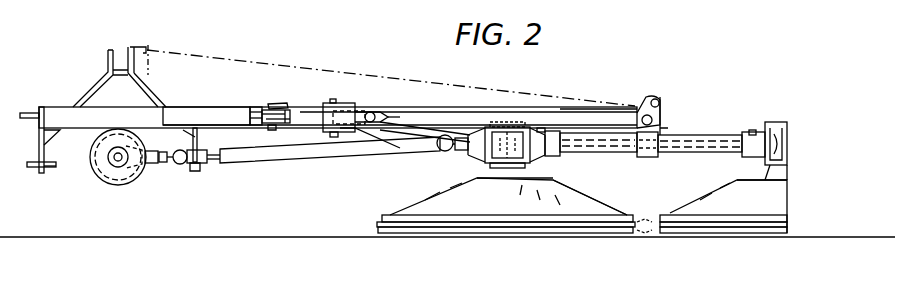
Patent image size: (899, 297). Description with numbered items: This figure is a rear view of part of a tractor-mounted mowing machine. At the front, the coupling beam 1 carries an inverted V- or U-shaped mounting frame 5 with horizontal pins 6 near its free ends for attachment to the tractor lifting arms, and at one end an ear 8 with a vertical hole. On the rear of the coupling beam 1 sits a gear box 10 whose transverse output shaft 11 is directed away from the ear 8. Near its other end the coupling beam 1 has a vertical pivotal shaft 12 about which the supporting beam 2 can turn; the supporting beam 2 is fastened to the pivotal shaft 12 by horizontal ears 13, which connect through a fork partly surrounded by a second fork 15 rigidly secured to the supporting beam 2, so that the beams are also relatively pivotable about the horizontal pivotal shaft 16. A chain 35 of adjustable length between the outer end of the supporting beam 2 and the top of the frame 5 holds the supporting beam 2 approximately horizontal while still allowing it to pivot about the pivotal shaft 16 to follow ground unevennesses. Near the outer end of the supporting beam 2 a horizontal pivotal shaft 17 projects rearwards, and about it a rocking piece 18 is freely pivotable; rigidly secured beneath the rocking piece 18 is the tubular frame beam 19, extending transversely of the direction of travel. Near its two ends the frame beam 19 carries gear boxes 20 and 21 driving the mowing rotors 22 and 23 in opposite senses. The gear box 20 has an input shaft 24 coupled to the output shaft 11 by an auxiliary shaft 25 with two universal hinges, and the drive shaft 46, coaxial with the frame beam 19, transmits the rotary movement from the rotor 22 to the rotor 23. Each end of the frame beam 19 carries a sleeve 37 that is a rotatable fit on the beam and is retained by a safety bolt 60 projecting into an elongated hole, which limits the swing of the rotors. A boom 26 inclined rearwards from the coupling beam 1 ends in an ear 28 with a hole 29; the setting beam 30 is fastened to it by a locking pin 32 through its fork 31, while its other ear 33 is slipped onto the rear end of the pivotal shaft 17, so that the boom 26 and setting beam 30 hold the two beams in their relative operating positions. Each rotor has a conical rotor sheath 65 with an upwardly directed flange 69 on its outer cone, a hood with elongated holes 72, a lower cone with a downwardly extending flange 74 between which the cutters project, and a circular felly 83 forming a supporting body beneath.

The coupling beam 1 is at (127, 110).
The supporting beam 2 is at (610, 108).
The mounting frame 5 is at (103, 81).
The horizontal pins 6 is at (46, 169).
The ear 8 is at (33, 107).
The gear box 10 is at (121, 183).
The output shaft 11 is at (170, 164).
The pivotal shaft 12 is at (332, 103).
The ears 13 is at (352, 105).
The second fork 15 is at (383, 132).
The pivotal shaft 16 is at (398, 114).
The pivotal shaft 17 is at (661, 115).
The rocking piece 18 is at (660, 133).
The frame beam 19 is at (722, 136).
The gear box 20 is at (488, 175).
The gear box 21 is at (778, 122).
The mowing rotor 22 is at (405, 202).
The mowing rotor 23 is at (705, 198).
The input shaft 24 is at (457, 150).
The auxiliary shaft 25 is at (322, 155).
The boom 26 is at (190, 112).
The ear 28 is at (250, 113).
The hole 29 is at (265, 107).
The setting beam 30 is at (452, 110).
The fork 31 is at (278, 127).
The locking pin 32 is at (283, 103).
The ear 33 is at (652, 97).
The chain 35 is at (514, 88).
The sleeve 37 is at (547, 156).
The drive shaft 46 is at (612, 160).
The safety bolt 60 is at (543, 128).
The rotor sheath 65 is at (615, 204).
The flange 69 is at (500, 218).
The elongated holes 72 is at (771, 212).
The flange 74 is at (578, 228).
The felly 83 is at (423, 236).